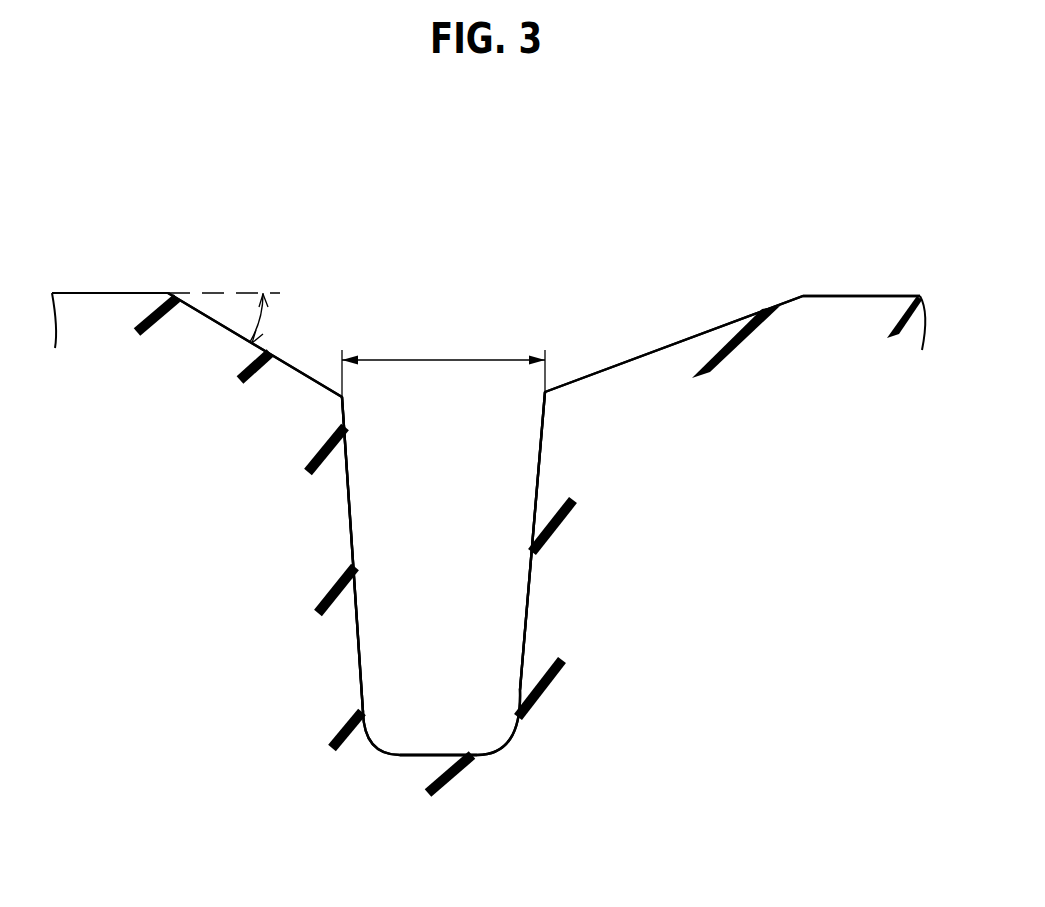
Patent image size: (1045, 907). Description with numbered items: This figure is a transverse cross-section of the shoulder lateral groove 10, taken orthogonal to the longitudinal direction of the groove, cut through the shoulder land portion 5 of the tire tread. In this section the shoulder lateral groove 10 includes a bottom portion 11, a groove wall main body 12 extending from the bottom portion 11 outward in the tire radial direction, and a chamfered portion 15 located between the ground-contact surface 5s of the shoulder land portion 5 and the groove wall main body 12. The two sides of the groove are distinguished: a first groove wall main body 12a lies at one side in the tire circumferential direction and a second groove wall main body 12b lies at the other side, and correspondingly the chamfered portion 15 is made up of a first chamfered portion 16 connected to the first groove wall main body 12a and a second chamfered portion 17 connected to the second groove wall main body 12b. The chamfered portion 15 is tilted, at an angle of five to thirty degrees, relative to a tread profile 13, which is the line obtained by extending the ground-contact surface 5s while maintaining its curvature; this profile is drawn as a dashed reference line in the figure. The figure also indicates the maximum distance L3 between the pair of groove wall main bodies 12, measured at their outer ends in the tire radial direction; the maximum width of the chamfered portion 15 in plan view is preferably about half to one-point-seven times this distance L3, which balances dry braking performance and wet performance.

The shoulder land portion 5 is at (863, 296).
The ground-contact surface 5s is at (100, 292).
The shoulder lateral groove 10 is at (458, 492).
The bottom portion 11 is at (441, 755).
The groove wall main body 12 is at (453, 552).
The first groove wall main body 12a is at (358, 603).
The second groove wall main body 12b is at (527, 578).
The tread profile 13 is at (225, 293).
The chamfered portion 15 is at (485, 271).
The first chamfered portion 16 is at (312, 378).
The second chamfered portion 17 is at (673, 342).
The maximum distance between groove wall main bodies L3 is at (443, 355).